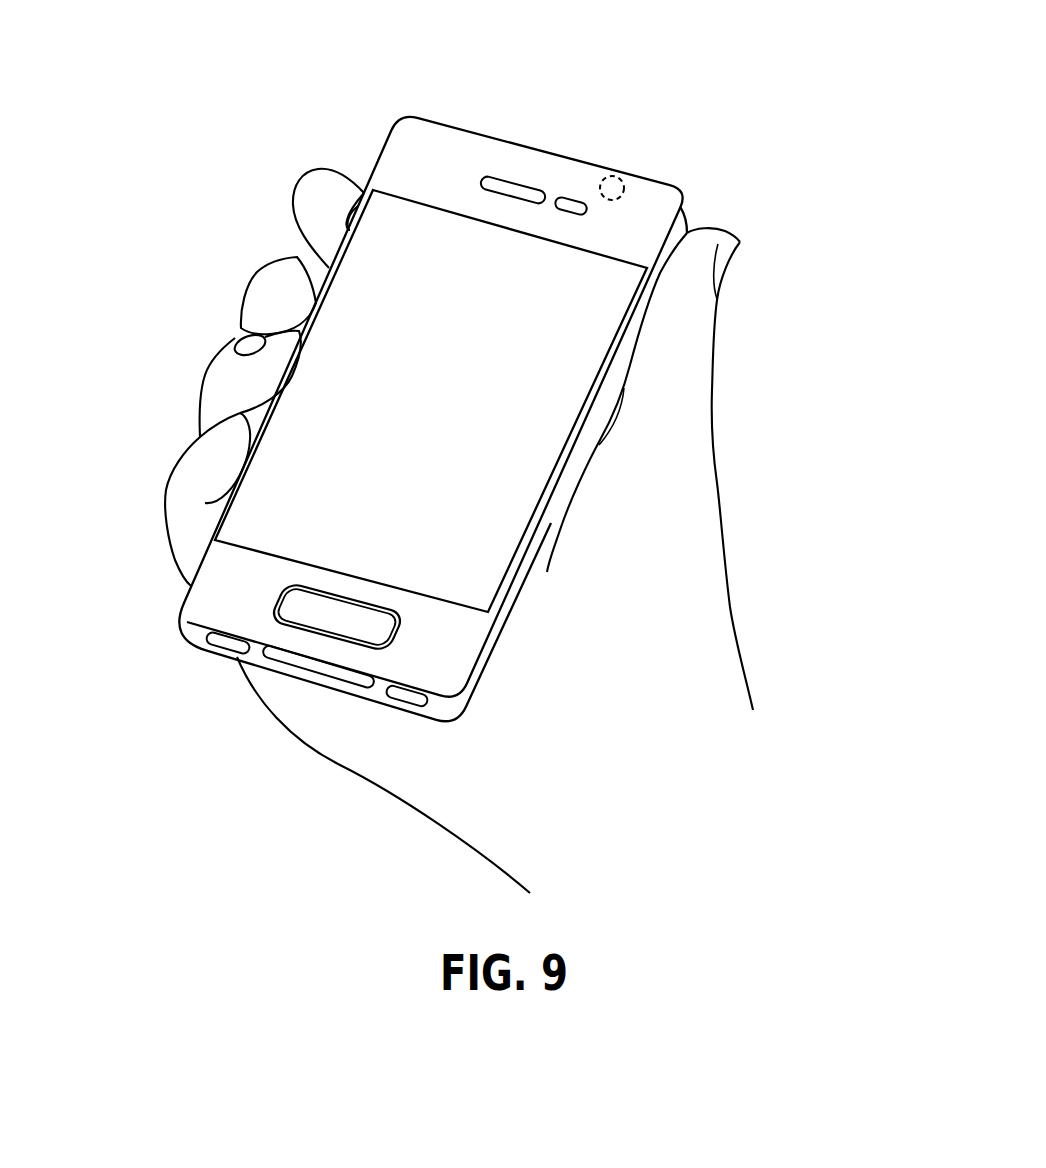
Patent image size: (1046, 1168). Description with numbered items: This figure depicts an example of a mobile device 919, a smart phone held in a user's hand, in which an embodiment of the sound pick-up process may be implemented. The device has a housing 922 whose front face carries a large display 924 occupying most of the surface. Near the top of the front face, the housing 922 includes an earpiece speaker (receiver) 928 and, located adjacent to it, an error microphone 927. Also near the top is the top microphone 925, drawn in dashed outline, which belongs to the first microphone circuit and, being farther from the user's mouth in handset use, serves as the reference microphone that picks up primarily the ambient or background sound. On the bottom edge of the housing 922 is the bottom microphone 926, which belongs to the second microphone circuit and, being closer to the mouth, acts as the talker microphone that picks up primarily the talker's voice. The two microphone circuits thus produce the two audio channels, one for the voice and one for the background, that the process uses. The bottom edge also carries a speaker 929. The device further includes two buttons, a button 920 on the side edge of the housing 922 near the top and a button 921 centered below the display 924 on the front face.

The mobile device 919 is at (816, 89).
The button 920 is at (364, 172).
The button 921 is at (337, 617).
The housing 922 is at (507, 628).
The display 924 is at (353, 280).
The top microphone 925 is at (623, 178).
The bottom microphone 926 is at (400, 700).
The error microphone 927 is at (568, 198).
The earpiece speaker 928 is at (486, 178).
The speaker 929 is at (220, 641).